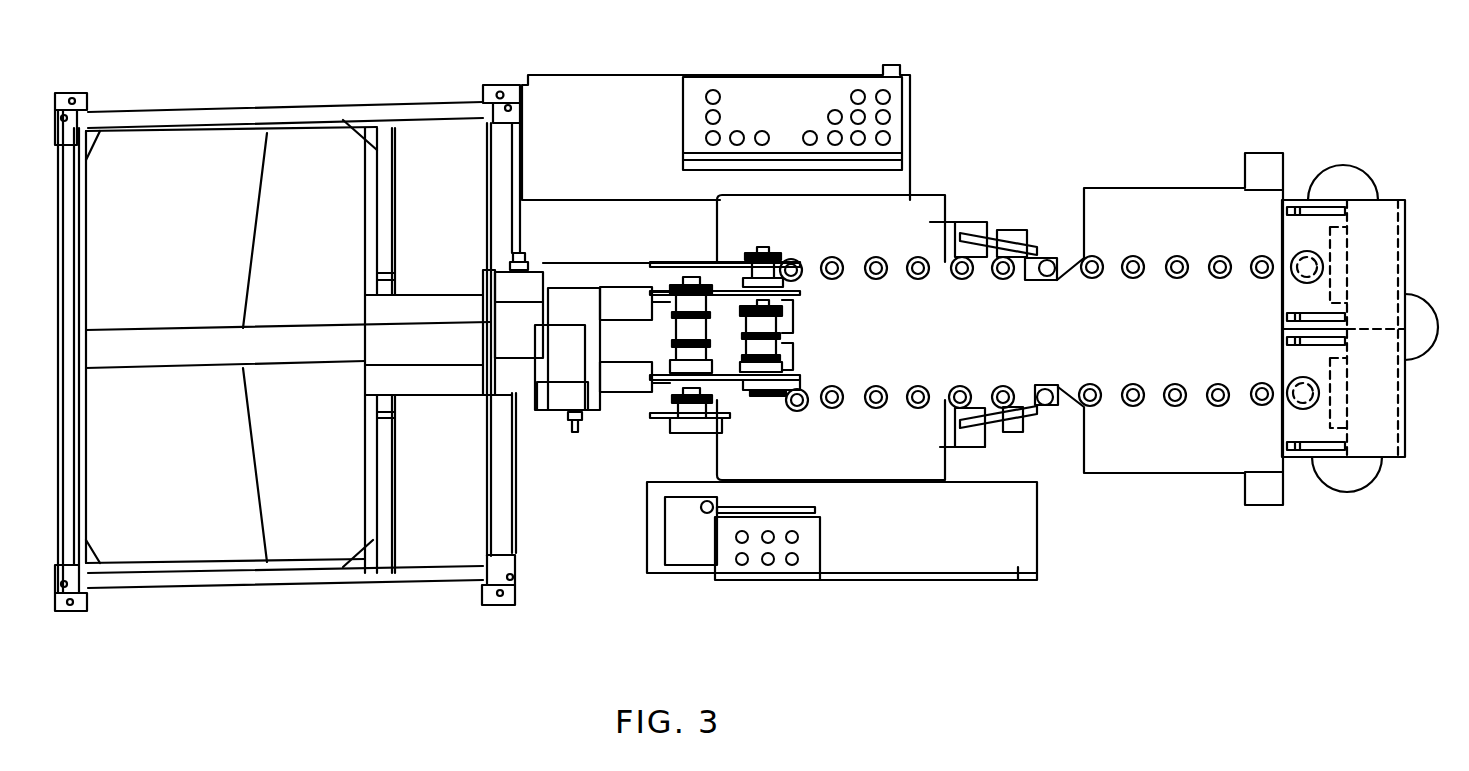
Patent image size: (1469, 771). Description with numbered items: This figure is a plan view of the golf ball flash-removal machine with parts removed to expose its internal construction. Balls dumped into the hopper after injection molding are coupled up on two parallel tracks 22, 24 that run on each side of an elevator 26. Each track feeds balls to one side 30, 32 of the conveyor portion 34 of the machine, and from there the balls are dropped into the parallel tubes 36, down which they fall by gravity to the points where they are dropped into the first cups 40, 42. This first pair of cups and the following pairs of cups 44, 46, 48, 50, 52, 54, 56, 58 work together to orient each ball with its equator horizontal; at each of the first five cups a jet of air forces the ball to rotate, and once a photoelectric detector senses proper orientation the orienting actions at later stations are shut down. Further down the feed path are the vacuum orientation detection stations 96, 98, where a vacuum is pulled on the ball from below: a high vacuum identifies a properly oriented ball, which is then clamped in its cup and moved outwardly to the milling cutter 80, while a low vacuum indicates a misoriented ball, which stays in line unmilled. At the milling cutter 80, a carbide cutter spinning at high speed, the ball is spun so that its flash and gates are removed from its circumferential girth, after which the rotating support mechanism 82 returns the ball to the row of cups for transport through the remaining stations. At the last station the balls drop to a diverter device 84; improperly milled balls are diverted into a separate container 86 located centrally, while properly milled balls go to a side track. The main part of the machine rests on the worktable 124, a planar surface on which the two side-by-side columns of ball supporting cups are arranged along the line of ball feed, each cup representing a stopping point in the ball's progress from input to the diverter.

The parallel track 22 is at (415, 300).
The parallel track 24 is at (433, 387).
The elevator 26 is at (448, 400).
The side of conveyor portion 30 is at (900, 248).
The side of conveyor portion 32 is at (854, 410).
The conveyor portion 34 is at (957, 222).
The parallel tubes 36 is at (790, 405).
The first cup 40 is at (770, 385).
The first cup 42 is at (787, 255).
The cup 44 is at (832, 410).
The cup 46 is at (832, 258).
The cup 48 is at (876, 410).
The cup 50 is at (876, 258).
The cup 52 is at (918, 410).
The cup 54 is at (918, 258).
The cup 56 is at (960, 410).
The cup 58 is at (965, 205).
The milling cutter 80 is at (1010, 247).
The rotating support mechanism 82 is at (990, 242).
The diverter device 84 is at (1360, 178).
The separate container 86 is at (1420, 340).
The vacuum orientation detection station 96 is at (1047, 258).
The vacuum orientation detection station 98 is at (1045, 405).
The worktable 124 is at (1122, 198).